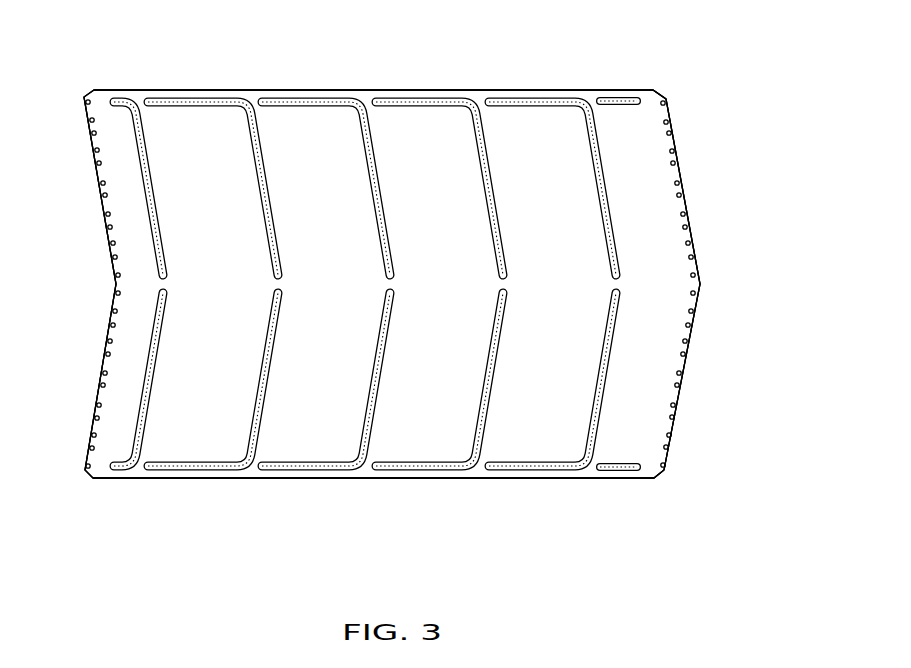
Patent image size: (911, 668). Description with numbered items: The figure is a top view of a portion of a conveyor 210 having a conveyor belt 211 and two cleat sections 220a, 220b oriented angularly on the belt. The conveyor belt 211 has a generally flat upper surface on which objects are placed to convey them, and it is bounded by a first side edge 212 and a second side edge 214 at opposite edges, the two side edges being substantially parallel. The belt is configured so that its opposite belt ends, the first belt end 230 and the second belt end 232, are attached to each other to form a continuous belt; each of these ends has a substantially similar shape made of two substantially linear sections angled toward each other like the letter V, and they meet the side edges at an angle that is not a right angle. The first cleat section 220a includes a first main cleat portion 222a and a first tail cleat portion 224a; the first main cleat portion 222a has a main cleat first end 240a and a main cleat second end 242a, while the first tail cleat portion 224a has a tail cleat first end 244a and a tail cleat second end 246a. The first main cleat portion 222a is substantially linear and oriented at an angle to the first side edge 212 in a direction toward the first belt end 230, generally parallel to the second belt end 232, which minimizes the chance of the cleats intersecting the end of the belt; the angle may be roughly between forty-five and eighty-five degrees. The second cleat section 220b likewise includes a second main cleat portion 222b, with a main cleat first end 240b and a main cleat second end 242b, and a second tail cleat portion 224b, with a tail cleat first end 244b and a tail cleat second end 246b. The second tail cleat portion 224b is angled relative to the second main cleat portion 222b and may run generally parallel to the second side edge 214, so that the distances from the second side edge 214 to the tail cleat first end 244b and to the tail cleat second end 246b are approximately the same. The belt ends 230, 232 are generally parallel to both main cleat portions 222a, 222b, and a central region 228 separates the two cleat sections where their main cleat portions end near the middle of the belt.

The conveyor 210 is at (662, 51).
The conveyor belt 211 is at (652, 360).
The first side edge 212 is at (374, 90).
The second side edge 214 is at (373, 480).
The first cleat section 220a is at (233, 158).
The second cleat section 220b is at (233, 410).
The first main cleat portion 222a is at (255, 127).
The second main cleat portion 222b is at (260, 413).
The first tail cleat portion 224a is at (185, 97).
The second tail cleat portion 224b is at (177, 470).
The central channel 228 is at (162, 282).
The first belt end 230 is at (94, 394).
The second belt end 232 is at (683, 173).
The main cleat first end 240a is at (617, 240).
The main cleat first end 240b is at (617, 323).
The main cleat second end 242a is at (593, 115).
The main cleat second end 242b is at (593, 448).
The tail cleat first end 244a is at (560, 97).
The tail cleat first end 244b is at (560, 470).
The tail cleat second end 246a is at (492, 97).
The tail cleat second end 246b is at (492, 470).